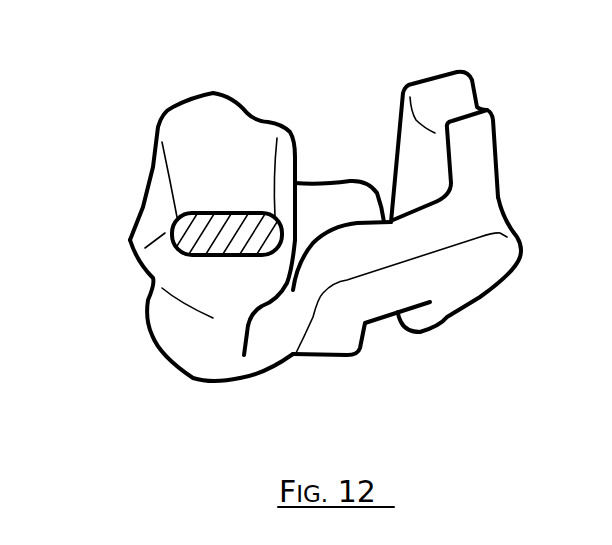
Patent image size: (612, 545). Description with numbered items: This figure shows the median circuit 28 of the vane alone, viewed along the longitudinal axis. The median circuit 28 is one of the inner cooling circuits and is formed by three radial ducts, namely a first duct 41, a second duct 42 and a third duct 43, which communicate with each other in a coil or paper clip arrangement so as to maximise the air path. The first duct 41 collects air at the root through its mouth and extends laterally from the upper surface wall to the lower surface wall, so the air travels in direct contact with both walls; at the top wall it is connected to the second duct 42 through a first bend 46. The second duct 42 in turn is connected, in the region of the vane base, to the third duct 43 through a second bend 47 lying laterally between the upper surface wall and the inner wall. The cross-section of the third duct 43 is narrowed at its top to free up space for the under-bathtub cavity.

The median circuit 28 is at (142, 97).
The first duct 41 is at (155, 183).
The second duct 42 is at (337, 340).
The third duct 43 is at (462, 298).
The first bend 46 is at (228, 363).
The second bend 47 is at (388, 240).